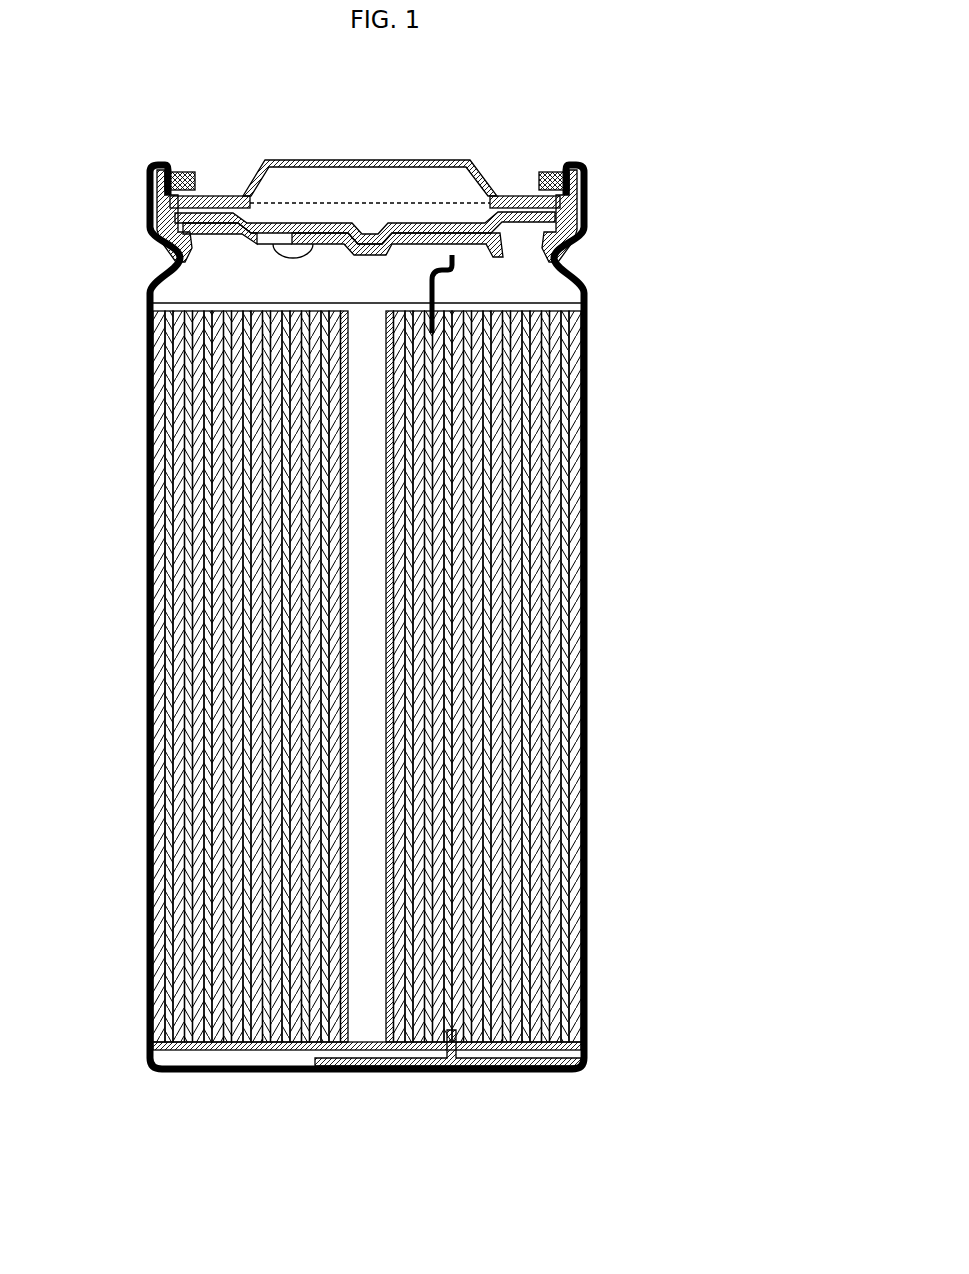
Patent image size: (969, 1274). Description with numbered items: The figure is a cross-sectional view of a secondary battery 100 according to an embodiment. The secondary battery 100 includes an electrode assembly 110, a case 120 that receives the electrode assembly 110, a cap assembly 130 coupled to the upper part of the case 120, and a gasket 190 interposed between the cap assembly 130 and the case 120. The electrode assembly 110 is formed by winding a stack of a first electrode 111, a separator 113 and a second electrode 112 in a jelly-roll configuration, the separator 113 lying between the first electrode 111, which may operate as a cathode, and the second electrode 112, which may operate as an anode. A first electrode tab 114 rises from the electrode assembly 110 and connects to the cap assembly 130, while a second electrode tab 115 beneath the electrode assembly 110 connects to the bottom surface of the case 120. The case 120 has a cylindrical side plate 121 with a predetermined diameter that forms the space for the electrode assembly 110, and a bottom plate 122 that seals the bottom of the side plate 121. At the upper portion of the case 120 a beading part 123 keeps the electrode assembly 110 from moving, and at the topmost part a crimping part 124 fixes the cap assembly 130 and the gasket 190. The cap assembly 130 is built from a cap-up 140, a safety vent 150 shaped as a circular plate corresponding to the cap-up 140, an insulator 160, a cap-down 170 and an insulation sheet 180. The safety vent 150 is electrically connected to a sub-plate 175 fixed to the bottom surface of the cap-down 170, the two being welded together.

The secondary battery 100 is at (108, 104).
The electrode assembly 110 is at (663, 352).
The first electrode 111 is at (562, 422).
The second electrode 112 is at (570, 358).
The separator 113 is at (566, 392).
The first electrode tab 114 is at (440, 288).
The second electrode tab 115 is at (412, 1075).
The case 120 is at (603, 524).
The side plate 121 is at (588, 876).
The bottom plate 122 is at (487, 1075).
The beading part 123 is at (565, 248).
The crimping part 124 is at (582, 165).
The cap assembly 130 is at (538, 92).
The cap-up 140 is at (392, 160).
The safety vent 150 is at (460, 223).
The insulator 160 is at (527, 196).
The cap-down 170 is at (327, 233).
The sub-plate 175 is at (273, 243).
The insulation sheet 180 is at (200, 190).
The gasket 190 is at (586, 210).